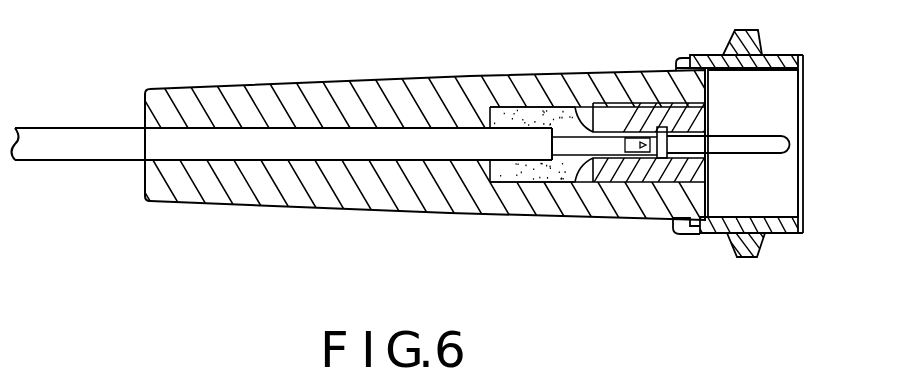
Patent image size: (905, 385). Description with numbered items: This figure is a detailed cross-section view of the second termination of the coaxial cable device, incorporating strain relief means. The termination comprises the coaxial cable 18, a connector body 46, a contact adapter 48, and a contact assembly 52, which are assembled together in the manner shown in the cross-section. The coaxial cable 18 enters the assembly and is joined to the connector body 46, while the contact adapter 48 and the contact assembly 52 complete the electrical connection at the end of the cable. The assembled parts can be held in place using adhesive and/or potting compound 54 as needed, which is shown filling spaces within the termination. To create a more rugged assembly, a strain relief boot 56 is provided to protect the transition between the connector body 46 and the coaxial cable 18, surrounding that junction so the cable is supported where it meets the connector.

The coaxial cable 18 is at (82, 127).
The connector body 46 is at (708, 232).
The contact adapter 48 is at (710, 97).
The contact assembly 52 is at (777, 155).
The adhesive and/or potting compound 54 is at (530, 118).
The strain relief boot 56 is at (232, 203).